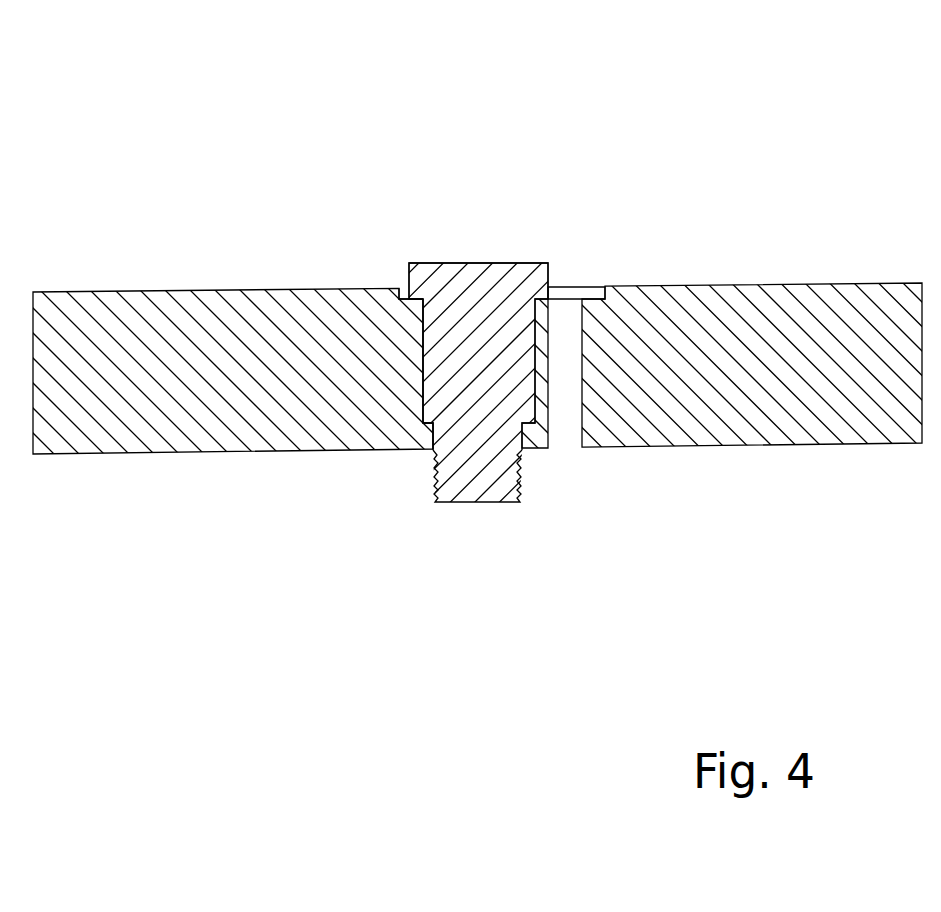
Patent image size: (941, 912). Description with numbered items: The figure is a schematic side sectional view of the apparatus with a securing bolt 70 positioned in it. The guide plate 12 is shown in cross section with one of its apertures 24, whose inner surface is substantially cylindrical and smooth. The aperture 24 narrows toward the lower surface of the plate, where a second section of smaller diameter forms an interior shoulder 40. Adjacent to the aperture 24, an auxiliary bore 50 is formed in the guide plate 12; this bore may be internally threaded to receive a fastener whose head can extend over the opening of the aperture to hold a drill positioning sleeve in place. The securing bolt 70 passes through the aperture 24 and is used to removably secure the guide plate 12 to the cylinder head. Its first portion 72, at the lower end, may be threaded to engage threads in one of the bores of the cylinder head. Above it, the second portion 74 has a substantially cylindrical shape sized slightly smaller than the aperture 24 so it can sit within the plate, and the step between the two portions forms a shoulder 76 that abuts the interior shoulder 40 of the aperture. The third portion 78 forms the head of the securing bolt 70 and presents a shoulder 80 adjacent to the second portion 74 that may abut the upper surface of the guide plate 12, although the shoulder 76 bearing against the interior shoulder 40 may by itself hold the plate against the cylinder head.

The guide plate 12 is at (675, 315).
The aperture 24 is at (537, 404).
The interior shoulder 40 is at (305, 419).
The auxiliary bore 50 is at (634, 388).
The securing bolt 70 is at (483, 323).
The first portion 72 is at (515, 535).
The second portion 74 is at (261, 296).
The shoulder 76 is at (425, 492).
The third portion 78 is at (421, 161).
The shoulder 80 is at (295, 197).